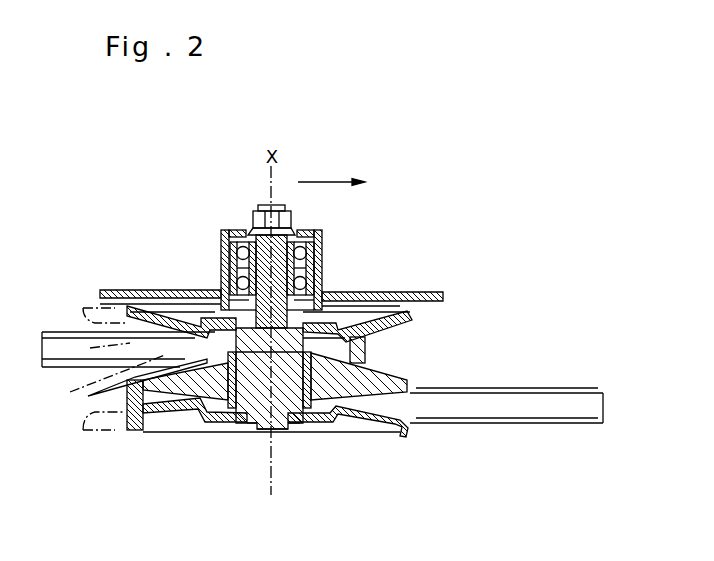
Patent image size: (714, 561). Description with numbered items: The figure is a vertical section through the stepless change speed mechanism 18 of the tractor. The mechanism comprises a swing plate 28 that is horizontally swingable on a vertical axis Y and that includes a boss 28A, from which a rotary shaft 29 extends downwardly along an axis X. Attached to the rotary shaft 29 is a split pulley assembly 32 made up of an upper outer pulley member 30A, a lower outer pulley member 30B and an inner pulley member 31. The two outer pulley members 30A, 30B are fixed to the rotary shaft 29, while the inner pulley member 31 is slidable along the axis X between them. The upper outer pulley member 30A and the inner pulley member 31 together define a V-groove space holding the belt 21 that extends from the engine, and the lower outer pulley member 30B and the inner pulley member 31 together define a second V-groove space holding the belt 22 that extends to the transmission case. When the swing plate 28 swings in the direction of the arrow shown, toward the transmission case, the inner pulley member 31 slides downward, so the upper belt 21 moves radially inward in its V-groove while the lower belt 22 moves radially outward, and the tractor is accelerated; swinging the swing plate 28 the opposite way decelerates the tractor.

The stepless change speed mechanism 18 is at (428, 208).
The belt 21 is at (52, 333).
The belt 22 is at (562, 412).
The swing plate 28 is at (400, 290).
The boss 28A is at (323, 248).
The rotary shaft 29 is at (258, 431).
The upper outer pulley member 30A is at (161, 320).
The lower outer pulley member 30B is at (350, 420).
The inner pulley member 31 is at (92, 389).
The split pulley assembly 32 is at (390, 458).